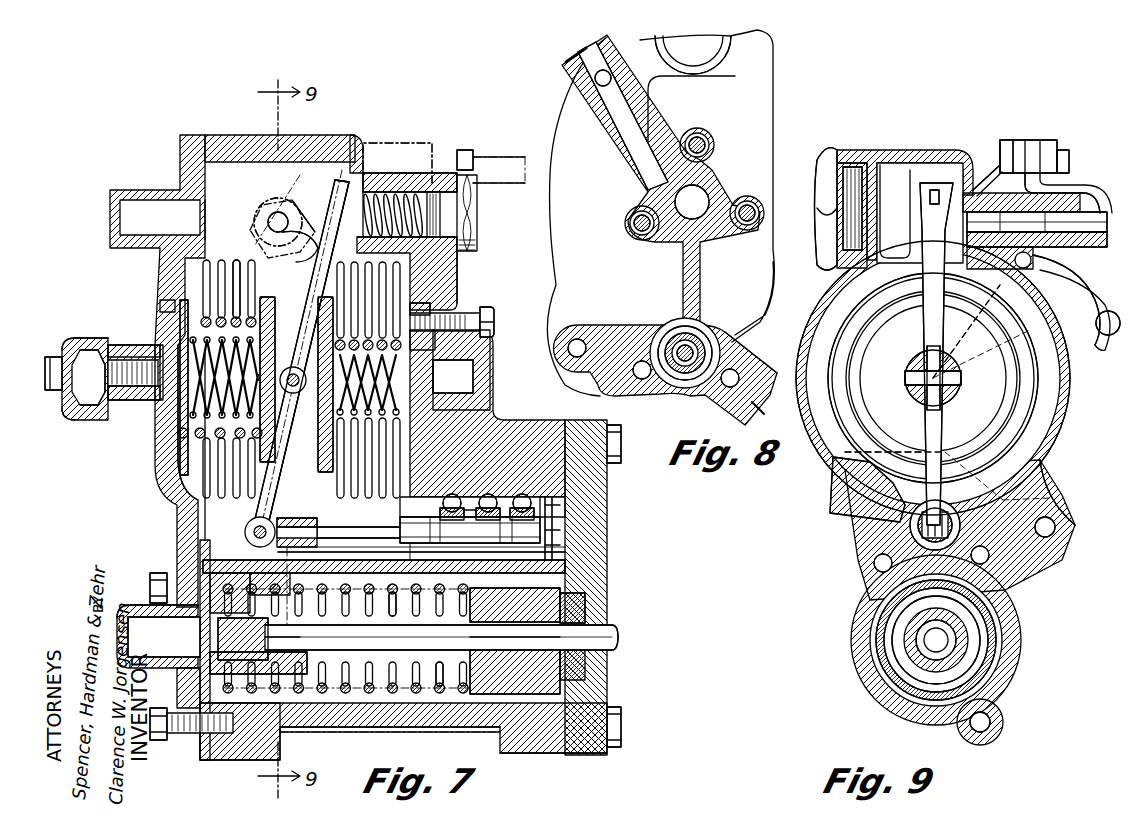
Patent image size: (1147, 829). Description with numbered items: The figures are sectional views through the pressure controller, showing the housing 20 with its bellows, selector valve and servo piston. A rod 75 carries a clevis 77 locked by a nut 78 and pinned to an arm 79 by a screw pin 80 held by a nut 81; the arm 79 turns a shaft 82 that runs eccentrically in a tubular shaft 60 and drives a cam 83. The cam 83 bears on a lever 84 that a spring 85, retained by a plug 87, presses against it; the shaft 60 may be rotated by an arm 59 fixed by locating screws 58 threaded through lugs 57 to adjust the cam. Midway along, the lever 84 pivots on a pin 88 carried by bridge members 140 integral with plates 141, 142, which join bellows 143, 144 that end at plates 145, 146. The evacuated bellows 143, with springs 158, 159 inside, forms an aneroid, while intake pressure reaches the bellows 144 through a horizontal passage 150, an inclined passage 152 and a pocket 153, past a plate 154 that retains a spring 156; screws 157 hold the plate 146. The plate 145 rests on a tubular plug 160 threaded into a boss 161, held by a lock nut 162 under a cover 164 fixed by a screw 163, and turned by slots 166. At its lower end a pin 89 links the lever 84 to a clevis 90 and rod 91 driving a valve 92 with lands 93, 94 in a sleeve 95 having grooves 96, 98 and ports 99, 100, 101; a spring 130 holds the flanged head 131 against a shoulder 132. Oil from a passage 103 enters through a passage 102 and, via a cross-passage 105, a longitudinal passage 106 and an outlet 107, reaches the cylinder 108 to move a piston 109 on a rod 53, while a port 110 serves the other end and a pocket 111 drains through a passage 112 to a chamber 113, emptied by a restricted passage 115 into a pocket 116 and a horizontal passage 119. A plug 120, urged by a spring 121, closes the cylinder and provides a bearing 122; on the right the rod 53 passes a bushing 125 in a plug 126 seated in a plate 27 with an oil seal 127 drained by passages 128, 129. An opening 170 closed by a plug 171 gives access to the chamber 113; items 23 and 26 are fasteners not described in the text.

In FIG. 7, the housing 20 is at (262, 760).
In FIG. 9, the housing 20 is at (852, 660).
In FIG. 7, the bolt 23 is at (150, 585).
In FIG. 7, the bolt 26 is at (621, 727).
In FIG. 7, the plate 27 is at (585, 754).
In FIG. 7, the rod 53 is at (618, 632).
In FIG. 9, the lugs 57 is at (1098, 318).
In FIG. 9, the locating screws 58 is at (1112, 328).
In FIG. 7, the arm 59 is at (325, 262).
In FIG. 9, the arm 59 is at (1080, 285).
In FIG. 7, the tubular shaft 60 is at (306, 245).
In FIG. 9, the tubular shaft 60 is at (1100, 240).
In FIG. 7, the rod 75 is at (508, 175).
In FIG. 9, the rod 75 is at (990, 175).
In FIG. 7, the clevis 77 is at (400, 143).
In FIG. 9, the clevis 77 is at (1052, 140).
In FIG. 7, the nut 78 is at (462, 150).
In FIG. 7, the arm 79 is at (290, 190).
In FIG. 9, the arm 79 is at (1085, 190).
In FIG. 9, the screw pin 80 is at (1007, 140).
In FIG. 9, the nut 81 is at (1063, 150).
In FIG. 7, the shaft 82 is at (270, 212).
In FIG. 9, the shaft 82 is at (1100, 220).
In FIG. 7, the cam 83 is at (302, 225).
In FIG. 9, the cam 83 is at (934, 190).
In FIG. 7, the lever 84 is at (340, 195).
In FIG. 9, the lever 84 is at (940, 427).
In FIG. 7, the spring 85 is at (414, 185).
In FIG. 8, the plug 87 is at (715, 55).
In FIG. 7, the pin 88 is at (293, 374).
In FIG. 9, the pin 88 is at (910, 383).
In FIG. 7, the pin 89 is at (250, 527).
In FIG. 9, the pin 89 is at (912, 532).
In FIG. 7, the clevis 90 is at (284, 523).
In FIG. 9, the clevis 90 is at (905, 513).
In FIG. 7, the rod 91 is at (490, 500).
In FIG. 7, the valve 92 is at (520, 530).
In FIG. 8, the valve 92 is at (708, 336).
In FIG. 7, the land 93 is at (442, 497).
In FIG. 7, the land 94 is at (522, 494).
In FIG. 7, the valve sleeve 95 is at (565, 510).
In FIG. 9, the valve sleeve 95 is at (908, 538).
In FIG. 7, the annular groove 96 is at (452, 470).
In FIG. 8, the annular groove 96 is at (683, 393).
In FIG. 7, the annular groove 98 is at (522, 497).
In FIG. 7, the ports 99 is at (458, 497).
In FIG. 8, the ports 99 is at (700, 325).
In FIG. 7, the ports 100 is at (490, 492).
In FIG. 7, the ports 101 is at (540, 500).
In FIG. 9, the passage 102 is at (1003, 500).
In FIG. 8, the passage 103 is at (577, 352).
In FIG. 9, the passage 103 is at (1052, 527).
In FIG. 7, the cross-passage 105 is at (465, 625).
In FIG. 8, the cross-passage 105 is at (720, 358).
In FIG. 7, the longitudinal passage 106 is at (390, 618).
In FIG. 8, the longitudinal passage 106 is at (741, 379).
In FIG. 9, the longitudinal passage 106 is at (878, 567).
In FIG. 7, the outlet 107 is at (232, 626).
In FIG. 7, the cylinder 108 is at (380, 700).
In FIG. 9, the cylinder 108 is at (905, 670).
In FIG. 7, the piston 109 is at (455, 700).
In FIG. 9, the piston 109 is at (893, 640).
In FIG. 7, the port 110 is at (545, 560).
In FIG. 7, the pocket 111 is at (575, 535).
In FIG. 8, the passage 112 is at (642, 385).
In FIG. 9, the passage 112 is at (985, 562).
In FIG. 7, the chamber 113 is at (205, 520).
In FIG. 9, the chamber 113 is at (1032, 462).
In FIG. 7, the restricted passage 115 is at (198, 622).
In FIG. 7, the pocket 116 is at (170, 660).
In FIG. 7, the horizontal passage 119 is at (205, 222).
In FIG. 7, the plug 120 is at (222, 650).
In FIG. 7, the spring 121 is at (335, 727).
In FIG. 7, the tubular bearing 122 is at (282, 645).
In FIG. 9, the tubular bearing 122 is at (956, 640).
In FIG. 7, the bushing 125 is at (540, 628).
In FIG. 7, the plug 126 is at (565, 583).
In FIG. 7, the oil seal member 127 is at (590, 607).
In FIG. 9, the oil seal member 127 is at (895, 600).
In FIG. 7, the vertical drain passage 128 is at (560, 686).
In FIG. 7, the horizontal drain passage 129 is at (415, 727).
In FIG. 9, the horizontal drain passage 129 is at (992, 722).
In FIG. 7, the spring 130 is at (560, 512).
In FIG. 7, the flanged head 131 is at (560, 500).
In FIG. 7, the shoulder 132 is at (565, 548).
In FIG. 7, the bridge members 140 is at (290, 450).
In FIG. 9, the bridge members 140 is at (950, 392).
In FIG. 7, the plate 141 is at (268, 298).
In FIG. 7, the plate 142 is at (326, 297).
In FIG. 7, the flexible metal bellows 143 is at (248, 255).
In FIG. 7, the flexible metal bellows 144 is at (505, 270).
In FIG. 9, the flexible metal bellows 144 is at (1052, 410).
In FIG. 7, the plate 145 is at (184, 310).
In FIG. 7, the plate 146 is at (440, 300).
In FIG. 8, the horizontal passage 150 is at (595, 80).
In FIG. 9, the horizontal passage 150 is at (1010, 265).
In FIG. 8, the vertically inclined passage 152 is at (650, 120).
In FIG. 7, the pocket 153 is at (480, 373).
In FIG. 8, the pocket 153 is at (705, 200).
In FIG. 7, the plate 154 is at (475, 348).
In FIG. 7, the spring 156 is at (430, 383).
In FIG. 7, the screws 157 is at (494, 322).
In FIG. 8, the screws 157 is at (746, 230).
In FIG. 7, the spring 158 is at (158, 348).
In FIG. 7, the spring 159 is at (165, 310).
In FIG. 7, the tubular plug 160 is at (137, 402).
In FIG. 7, the tubular boss 161 is at (132, 343).
In FIG. 7, the lock nut 162 is at (95, 408).
In FIG. 7, the screw 163 is at (55, 360).
In FIG. 7, the lock nut cover 164 is at (90, 340).
In FIG. 7, the screw driver slots 166 is at (70, 405).
In FIG. 9, the opening 170 is at (855, 163).
In FIG. 9, the plug 171 is at (828, 150).